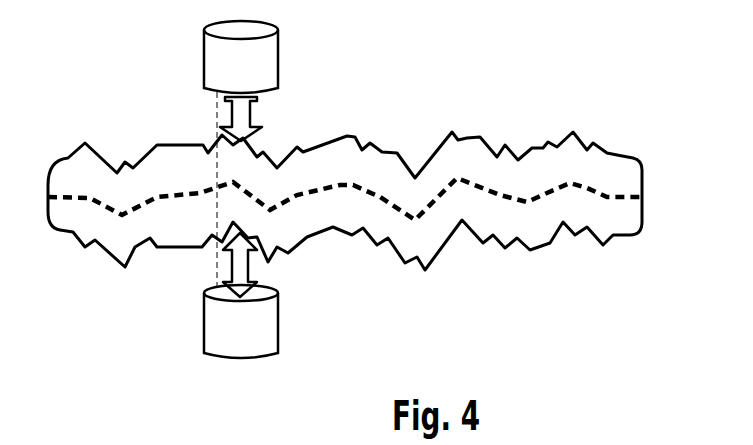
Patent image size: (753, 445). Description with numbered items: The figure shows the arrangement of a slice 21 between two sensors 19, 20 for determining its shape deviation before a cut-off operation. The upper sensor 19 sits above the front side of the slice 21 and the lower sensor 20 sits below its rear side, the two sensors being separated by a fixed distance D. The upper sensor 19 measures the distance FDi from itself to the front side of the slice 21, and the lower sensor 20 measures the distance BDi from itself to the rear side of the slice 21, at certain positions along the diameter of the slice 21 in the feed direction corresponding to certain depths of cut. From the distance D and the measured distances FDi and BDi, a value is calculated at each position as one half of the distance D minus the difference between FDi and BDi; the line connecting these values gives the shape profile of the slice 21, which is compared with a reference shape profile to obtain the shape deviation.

The upper sensor 19 is at (204, 58).
The lower sensor 20 is at (203, 325).
The slice 21 is at (617, 153).
The distance between the sensors D is at (206, 191).
The distance of the upper sensor from the front side of the slice FDi is at (250, 113).
The distance of the lower sensor from the rear side of the slice BDi is at (250, 268).